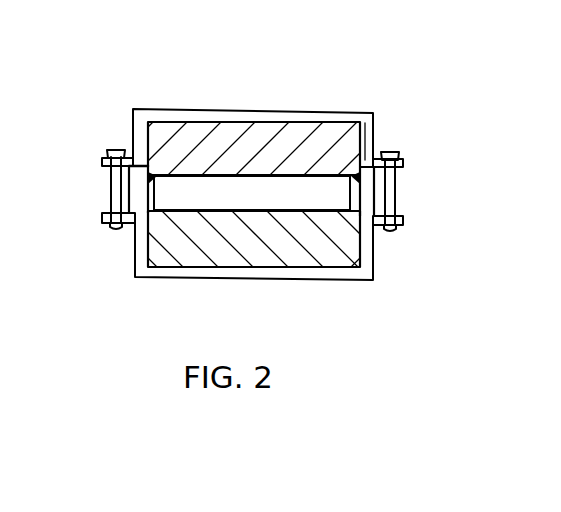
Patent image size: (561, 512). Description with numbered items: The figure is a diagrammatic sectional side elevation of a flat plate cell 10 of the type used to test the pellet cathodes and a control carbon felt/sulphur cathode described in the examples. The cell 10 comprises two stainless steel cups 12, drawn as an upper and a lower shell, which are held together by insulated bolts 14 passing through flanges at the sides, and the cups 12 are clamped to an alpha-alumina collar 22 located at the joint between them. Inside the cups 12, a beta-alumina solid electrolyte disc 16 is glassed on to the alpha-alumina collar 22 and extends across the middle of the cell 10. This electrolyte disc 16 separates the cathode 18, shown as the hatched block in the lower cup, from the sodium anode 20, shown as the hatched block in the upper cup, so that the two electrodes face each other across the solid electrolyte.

The cell 10 is at (398, 50).
The stainless steel cups 12 is at (209, 112).
The insulated bolts 14 is at (392, 198).
The beta-alumina solid electrolyte disc 16 is at (264, 188).
The cathode 18 is at (335, 243).
The sodium anode 20 is at (333, 138).
The alpha-alumina collar 22 is at (141, 166).